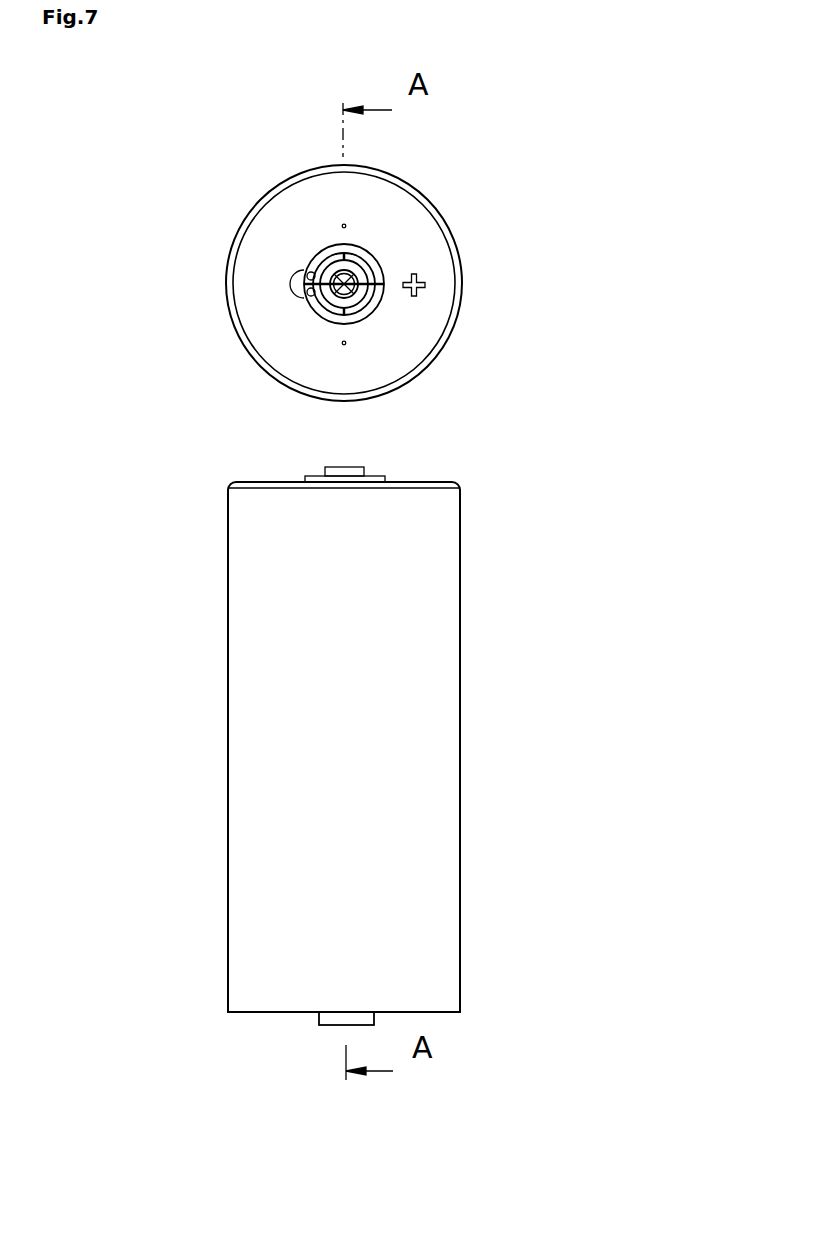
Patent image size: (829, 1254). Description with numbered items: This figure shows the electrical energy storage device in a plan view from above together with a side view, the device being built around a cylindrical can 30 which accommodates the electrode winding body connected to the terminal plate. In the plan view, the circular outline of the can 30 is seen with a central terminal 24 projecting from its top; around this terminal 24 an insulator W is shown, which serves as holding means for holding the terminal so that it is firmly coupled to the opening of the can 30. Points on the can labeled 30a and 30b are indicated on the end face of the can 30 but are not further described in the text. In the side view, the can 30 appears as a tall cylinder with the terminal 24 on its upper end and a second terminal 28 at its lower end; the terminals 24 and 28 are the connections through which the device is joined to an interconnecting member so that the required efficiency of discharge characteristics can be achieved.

The cylindrical can 30 is at (460, 280).
The cell bottom surface region 30a is at (344, 343).
The cell top surface region 30b is at (344, 226).
The terminal 24 is at (315, 322).
The insulator W is at (307, 273).
The terminal 28 is at (320, 1023).